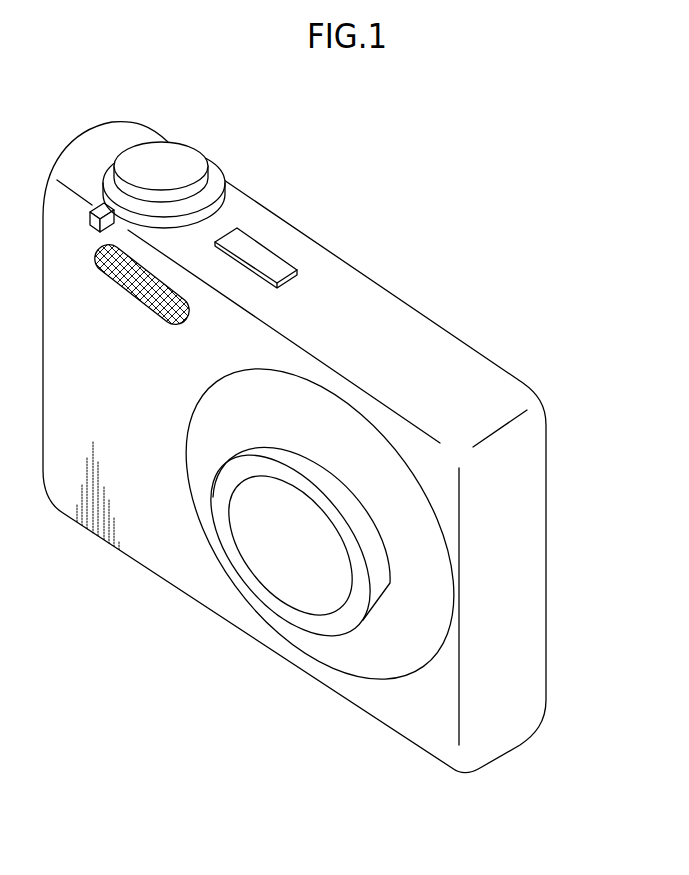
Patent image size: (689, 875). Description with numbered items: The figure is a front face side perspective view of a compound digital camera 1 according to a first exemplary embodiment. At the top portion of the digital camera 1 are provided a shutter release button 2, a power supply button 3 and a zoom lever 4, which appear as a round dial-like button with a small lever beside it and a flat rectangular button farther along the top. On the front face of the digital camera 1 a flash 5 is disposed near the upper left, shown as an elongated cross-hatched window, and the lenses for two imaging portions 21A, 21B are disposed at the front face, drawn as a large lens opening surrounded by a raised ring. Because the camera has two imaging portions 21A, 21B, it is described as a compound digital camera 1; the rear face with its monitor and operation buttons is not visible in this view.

The digital camera 1 is at (466, 301).
The shutter release button 2 is at (175, 152).
The power supply button 3 is at (252, 245).
The zoom lever 4 is at (100, 185).
The flash 5 is at (125, 287).
The imaging portion 21A is at (268, 583).
The imaging portion 21B is at (268, 583).